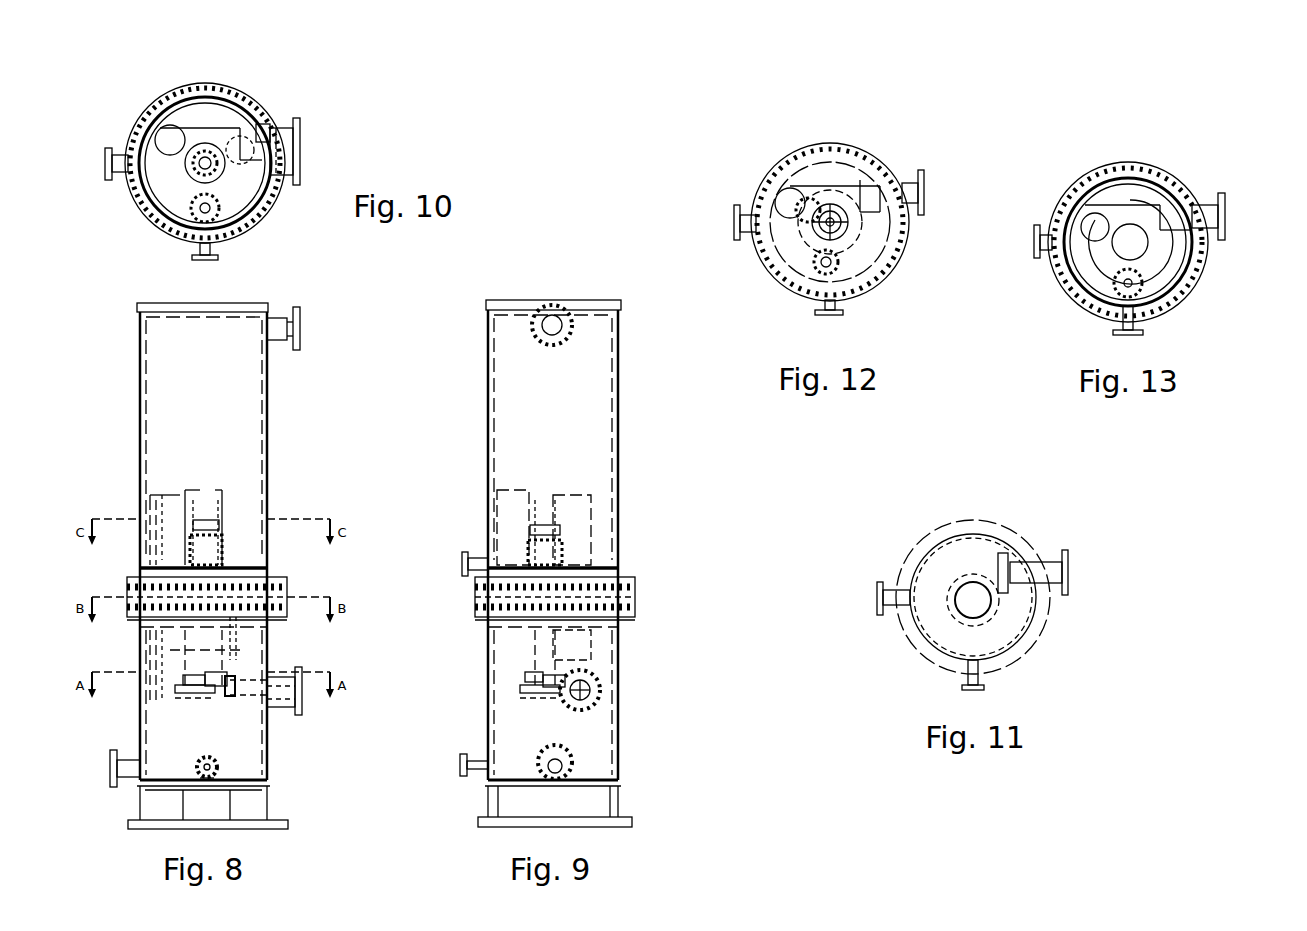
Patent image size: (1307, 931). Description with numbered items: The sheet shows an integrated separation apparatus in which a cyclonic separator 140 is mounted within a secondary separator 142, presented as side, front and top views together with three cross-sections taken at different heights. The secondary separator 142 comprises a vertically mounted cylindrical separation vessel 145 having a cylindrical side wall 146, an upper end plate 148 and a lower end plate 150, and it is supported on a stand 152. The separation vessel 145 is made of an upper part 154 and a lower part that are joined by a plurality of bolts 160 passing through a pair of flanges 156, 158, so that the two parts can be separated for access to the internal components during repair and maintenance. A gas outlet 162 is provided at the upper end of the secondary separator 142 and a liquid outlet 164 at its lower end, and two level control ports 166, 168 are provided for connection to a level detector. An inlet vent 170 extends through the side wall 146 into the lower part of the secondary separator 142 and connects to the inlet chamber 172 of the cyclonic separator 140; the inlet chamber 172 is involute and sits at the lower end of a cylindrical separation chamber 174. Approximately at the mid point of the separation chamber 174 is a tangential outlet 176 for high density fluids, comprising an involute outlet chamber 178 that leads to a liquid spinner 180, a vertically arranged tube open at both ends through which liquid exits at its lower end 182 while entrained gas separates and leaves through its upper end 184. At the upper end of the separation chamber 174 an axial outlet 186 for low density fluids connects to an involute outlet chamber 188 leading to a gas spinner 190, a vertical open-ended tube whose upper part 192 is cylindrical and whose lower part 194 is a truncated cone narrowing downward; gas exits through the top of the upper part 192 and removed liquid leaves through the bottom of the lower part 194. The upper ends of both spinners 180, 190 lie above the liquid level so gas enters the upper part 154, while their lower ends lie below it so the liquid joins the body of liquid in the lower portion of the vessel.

In FIG. 9, the cyclonic separator 140 is at (604, 545).
In FIG. 10, the cyclonic separator 140 is at (186, 101).
In FIG. 13, the cyclonic separator 140 is at (1146, 190).
In FIG. 8, the secondary separator 142 is at (272, 400).
In FIG. 9, the secondary separator 142 is at (620, 381).
In FIG. 8, the cylindrical separation vessel 145 is at (245, 422).
In FIG. 8, the cylindrical side wall 146 is at (139, 376).
In FIG. 8, the upper end plate 148 is at (148, 303).
In FIG. 10, the upper end plate 148 is at (208, 173).
In FIG. 8, the lower end plate 150 is at (268, 775).
In FIG. 8, the stand 152 is at (270, 797).
In FIG. 9, the stand 152 is at (615, 800).
In FIG. 8, the upper part 154 is at (177, 413).
In FIG. 8, the flange 156 is at (130, 579).
In FIG. 9, the flange 156 is at (555, 597).
In FIG. 13, the flange 156 is at (1190, 291).
In FIG. 8, the flange 158 is at (125, 612).
In FIG. 12, the flange 158 is at (875, 280).
In FIG. 12, the bolts 160 is at (895, 263).
In FIG. 13, the bolts 160 is at (1205, 272).
In FIG. 8, the gas outlet 162 is at (300, 333).
In FIG. 9, the gas outlet 162 is at (531, 330).
In FIG. 10, the gas outlet 162 is at (300, 160).
In FIG. 8, the liquid outlet 164 is at (110, 770).
In FIG. 9, the liquid outlet 164 is at (573, 762).
In FIG. 10, the liquid outlet 164 is at (107, 172).
In FIG. 12, the liquid outlet 164 is at (732, 227).
In FIG. 13, the liquid outlet 164 is at (1033, 241).
In FIG. 11, the liquid outlet 164 is at (877, 611).
In FIG. 9, the level control port 166 is at (462, 560).
In FIG. 10, the level control port 166 is at (218, 253).
In FIG. 13, the level control port 166 is at (1121, 333).
In FIG. 8, the level control port 168 is at (213, 766).
In FIG. 9, the level control port 168 is at (460, 770).
In FIG. 12, the level control port 168 is at (823, 311).
In FIG. 11, the level control port 168 is at (980, 689).
In FIG. 8, the inlet vent 170 is at (300, 707).
In FIG. 9, the inlet vent 170 is at (601, 686).
In FIG. 10, the inlet vent 170 is at (280, 130).
In FIG. 12, the inlet vent 170 is at (926, 180).
In FIG. 13, the inlet vent 170 is at (1226, 206).
In FIG. 11, the inlet vent 170 is at (1069, 565).
In FIG. 8, the inlet chamber 172 is at (203, 702).
In FIG. 9, the inlet chamber 172 is at (548, 700).
In FIG. 11, the inlet chamber 172 is at (972, 560).
In FIG. 8, the cylindrical separation chamber 174 is at (212, 652).
In FIG. 9, the cylindrical separation chamber 174 is at (535, 647).
In FIG. 11, the cylindrical separation chamber 174 is at (985, 604).
In FIG. 12, the tangential outlet 176 is at (822, 190).
In FIG. 12, the involute outlet chamber 178 is at (858, 223).
In FIG. 8, the liquid spinner 180 is at (150, 507).
In FIG. 12, the liquid spinner 180 is at (786, 195).
In FIG. 13, the liquid spinner 180 is at (1090, 216).
In FIG. 8, the lower end 182 is at (160, 655).
In FIG. 8, the upper end 184 is at (162, 502).
In FIG. 12, the axial outlet 186 is at (838, 218).
In FIG. 9, the involute outlet chamber 188 is at (548, 530).
In FIG. 13, the involute outlet chamber 188 is at (1125, 228).
In FIG. 8, the gas spinner 190 is at (218, 510).
In FIG. 13, the gas spinner 190 is at (1112, 290).
In FIG. 8, the upper part 192 is at (215, 492).
In FIG. 12, the upper part 192 is at (818, 262).
In FIG. 8, the lower part 194 is at (265, 620).